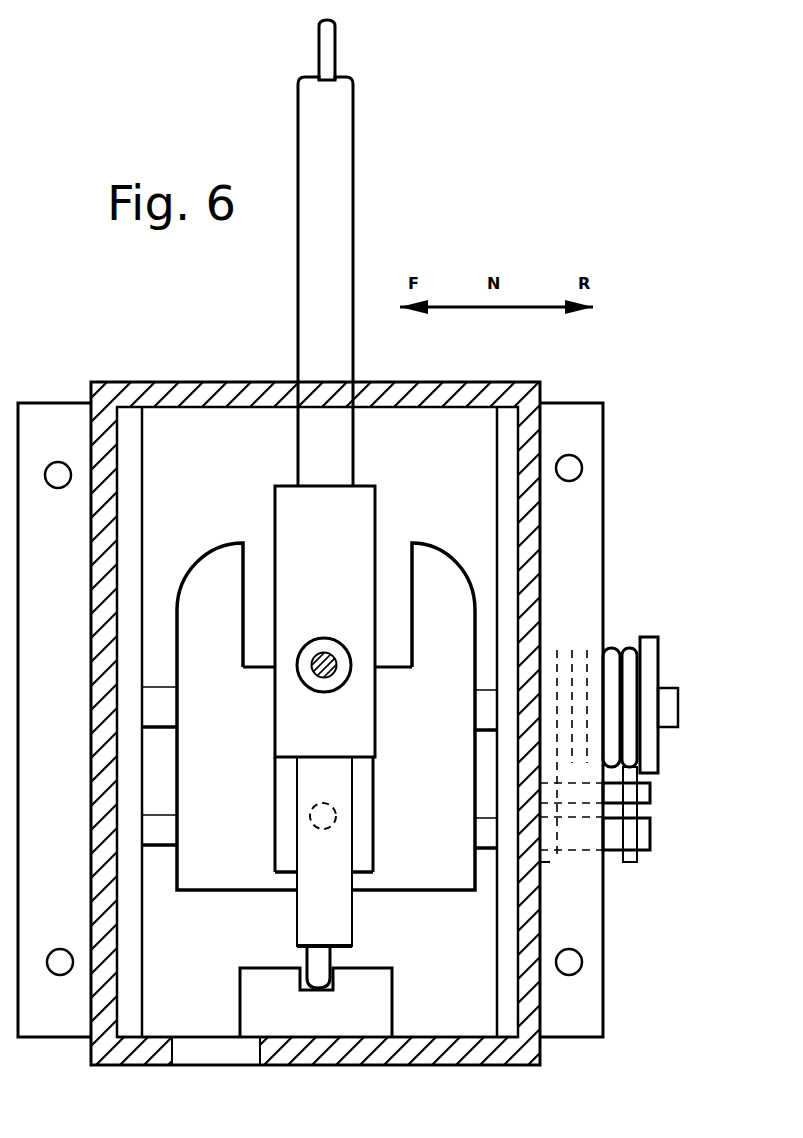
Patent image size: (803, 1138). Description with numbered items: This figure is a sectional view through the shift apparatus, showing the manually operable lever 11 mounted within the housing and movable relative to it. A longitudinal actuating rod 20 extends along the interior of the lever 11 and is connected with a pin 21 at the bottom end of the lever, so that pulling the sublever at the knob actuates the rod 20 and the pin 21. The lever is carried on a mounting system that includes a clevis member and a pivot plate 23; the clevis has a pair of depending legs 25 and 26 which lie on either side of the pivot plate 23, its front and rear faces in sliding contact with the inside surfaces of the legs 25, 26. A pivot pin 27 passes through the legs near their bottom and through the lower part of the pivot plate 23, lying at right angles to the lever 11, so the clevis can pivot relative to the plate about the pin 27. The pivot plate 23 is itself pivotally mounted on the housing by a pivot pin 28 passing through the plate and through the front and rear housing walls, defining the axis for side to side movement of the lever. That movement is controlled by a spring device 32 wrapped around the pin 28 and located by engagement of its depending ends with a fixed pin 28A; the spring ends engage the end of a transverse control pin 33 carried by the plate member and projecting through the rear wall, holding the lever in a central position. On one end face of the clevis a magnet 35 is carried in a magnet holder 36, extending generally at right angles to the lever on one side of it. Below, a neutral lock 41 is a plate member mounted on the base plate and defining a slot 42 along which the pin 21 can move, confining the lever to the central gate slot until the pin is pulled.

The manually operable lever 11 is at (335, 213).
The longitudinal actuating rod 20 is at (330, 38).
The pin 21 is at (316, 959).
The pivot plate 23 is at (433, 572).
The depending leg 25 is at (287, 791).
The depending leg 26 is at (358, 778).
The pivot pin 27 is at (336, 816).
The pivot pin 28 is at (157, 705).
The fixed pin 28A is at (650, 793).
The spring device 32 is at (611, 650).
The transverse control pin 33 is at (645, 837).
The magnet 35 is at (306, 686).
The magnet holder 36 is at (331, 684).
The neutral lock 41 is at (382, 1021).
The slot 42 is at (346, 1006).